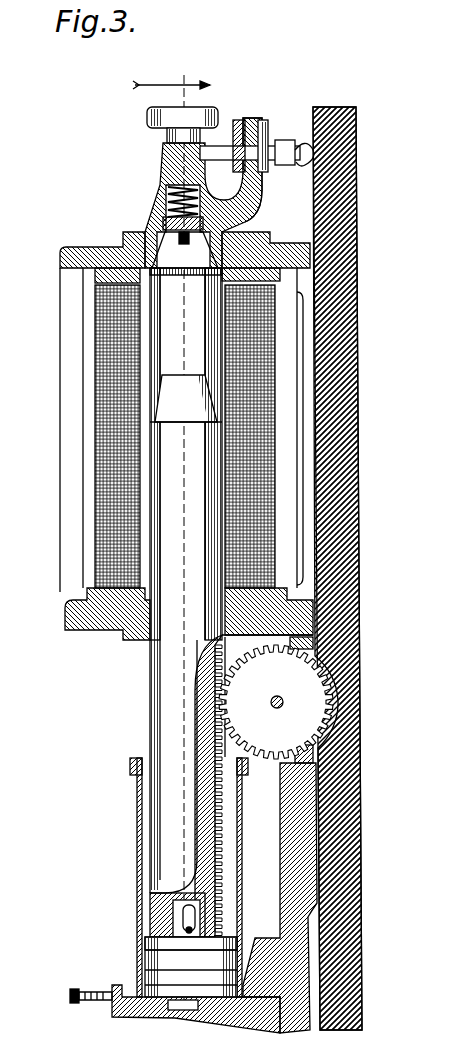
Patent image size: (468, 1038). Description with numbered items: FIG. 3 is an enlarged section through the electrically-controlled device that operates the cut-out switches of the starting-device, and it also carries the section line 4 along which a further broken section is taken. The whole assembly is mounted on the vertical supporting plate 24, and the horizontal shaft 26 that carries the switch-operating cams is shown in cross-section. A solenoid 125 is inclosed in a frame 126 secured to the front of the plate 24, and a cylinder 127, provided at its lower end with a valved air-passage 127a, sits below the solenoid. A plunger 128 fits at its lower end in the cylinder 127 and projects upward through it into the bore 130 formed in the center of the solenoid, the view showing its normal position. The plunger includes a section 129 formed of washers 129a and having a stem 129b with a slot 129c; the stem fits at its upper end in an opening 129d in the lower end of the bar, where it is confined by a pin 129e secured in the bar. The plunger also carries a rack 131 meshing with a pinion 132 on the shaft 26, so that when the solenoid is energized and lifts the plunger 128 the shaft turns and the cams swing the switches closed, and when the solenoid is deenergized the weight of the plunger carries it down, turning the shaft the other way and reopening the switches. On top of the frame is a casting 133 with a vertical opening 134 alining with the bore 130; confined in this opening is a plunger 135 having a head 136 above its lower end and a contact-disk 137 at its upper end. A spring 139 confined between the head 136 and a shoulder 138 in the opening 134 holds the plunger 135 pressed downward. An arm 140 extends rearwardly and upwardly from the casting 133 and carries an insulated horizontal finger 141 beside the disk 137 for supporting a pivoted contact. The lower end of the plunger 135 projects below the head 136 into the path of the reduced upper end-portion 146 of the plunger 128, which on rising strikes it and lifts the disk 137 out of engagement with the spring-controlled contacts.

The section line 4 is at (171, 72).
The supporting plate 24 is at (340, 482).
The shaft 26 is at (283, 702).
The solenoid 125 is at (104, 604).
The frame 126 is at (66, 607).
The cylinder 127 is at (137, 860).
The valved air-passage 127a is at (132, 1004).
The plunger 128 is at (160, 718).
The section 129 is at (190, 954).
The washers 129a is at (145, 943).
The stem 129b is at (203, 906).
The slot 129c is at (232, 876).
The opening 129d is at (150, 908).
The pin 129e is at (203, 927).
The bore 130 is at (100, 364).
The rack 131 is at (200, 660).
The pinion 132 is at (276, 702).
The casting 133 is at (167, 197).
The vertical opening 134 is at (165, 214).
The plunger 135 is at (168, 152).
The head 136 is at (233, 227).
The contact-disk 137 is at (214, 106).
The shoulder 138 is at (165, 182).
The spring 139 is at (247, 207).
The arm 140 is at (262, 126).
The insulated horizontal finger 141 is at (220, 146).
The reduced upper end-portion 146 is at (192, 374).